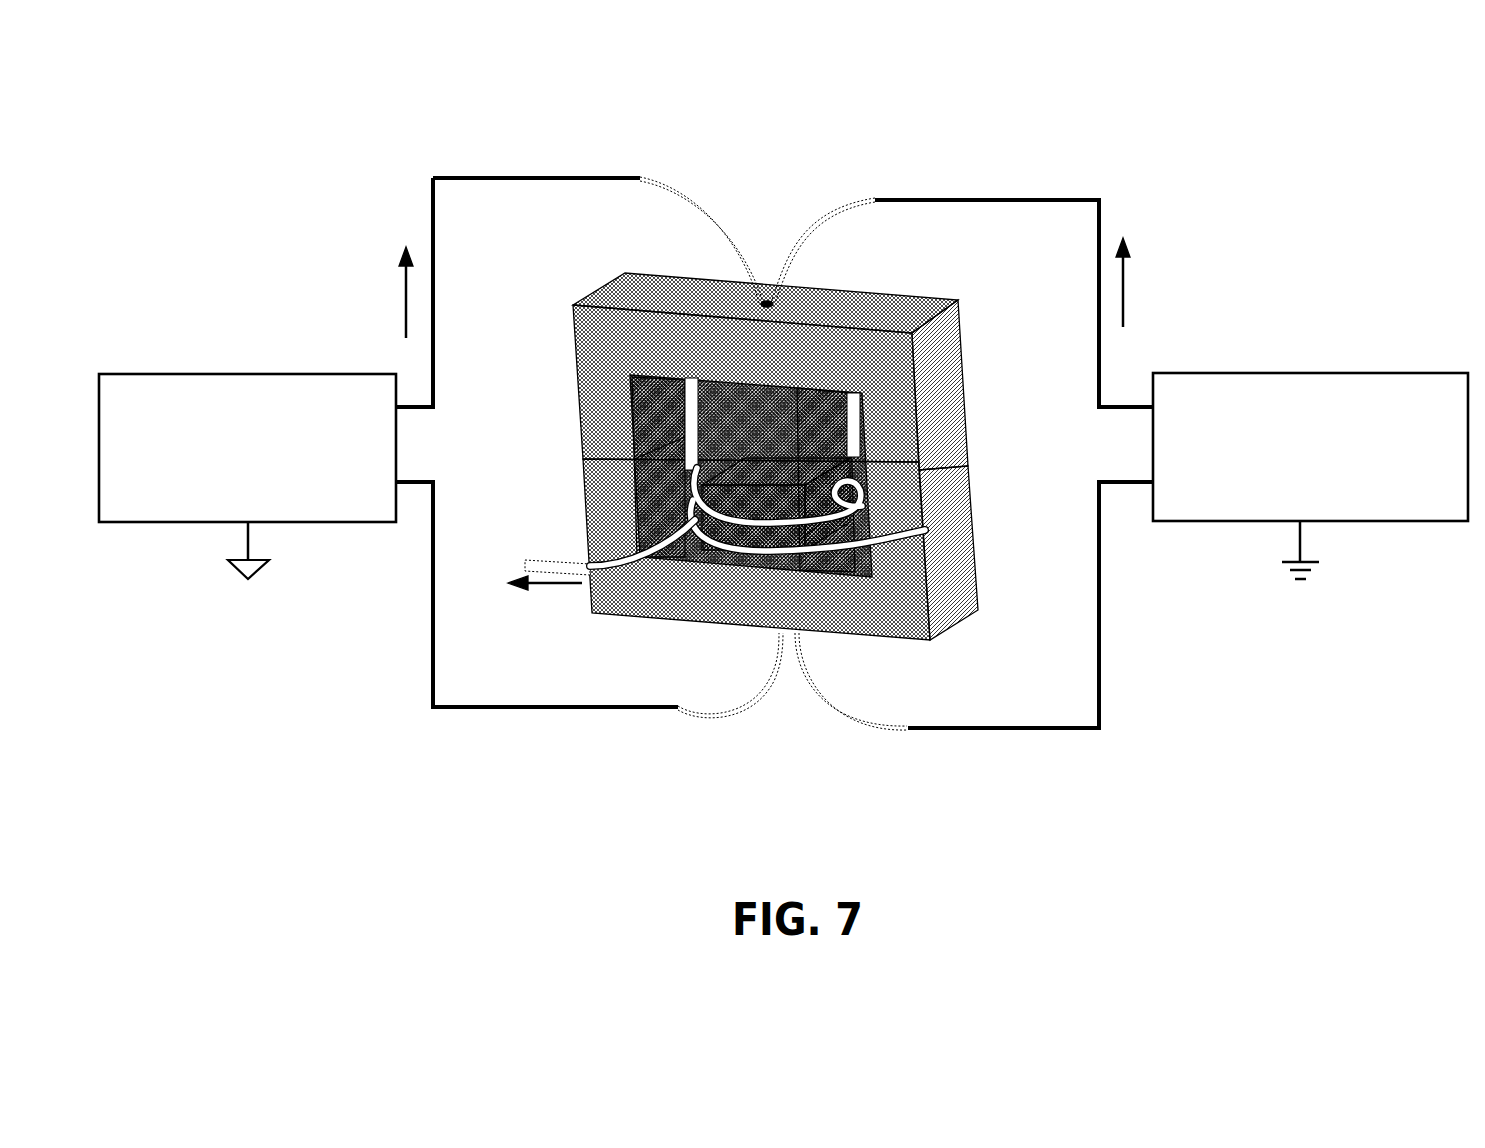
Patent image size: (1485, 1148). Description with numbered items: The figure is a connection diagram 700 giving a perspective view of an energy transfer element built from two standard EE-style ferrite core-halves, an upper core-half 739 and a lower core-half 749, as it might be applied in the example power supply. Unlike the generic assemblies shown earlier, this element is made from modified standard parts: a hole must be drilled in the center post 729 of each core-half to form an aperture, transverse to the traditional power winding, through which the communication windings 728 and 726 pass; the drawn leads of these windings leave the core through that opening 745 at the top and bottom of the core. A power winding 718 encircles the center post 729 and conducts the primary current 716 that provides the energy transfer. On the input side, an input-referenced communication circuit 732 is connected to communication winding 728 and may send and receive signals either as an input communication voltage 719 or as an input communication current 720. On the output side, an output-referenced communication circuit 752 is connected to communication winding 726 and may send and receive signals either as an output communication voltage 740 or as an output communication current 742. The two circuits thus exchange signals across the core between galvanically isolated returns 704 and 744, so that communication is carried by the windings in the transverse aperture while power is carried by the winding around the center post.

The connection diagram 700 is at (455, 88).
The input-referenced return 704 is at (235, 575).
The current IP1 716 is at (540, 595).
The power winding 718 is at (548, 558).
The input communication voltage Vc1 719 is at (450, 437).
The current IC1 720 is at (388, 271).
The communication winding 726 is at (830, 205).
The communication winding 728 is at (693, 215).
The center post 729 is at (777, 436).
The input-referenced communication circuit 732 is at (217, 366).
The upper core-half 739 is at (963, 426).
The voltage VC2 740 is at (1064, 424).
The current IC2 742 is at (1135, 256).
The output-referenced return 744 is at (1282, 571).
The core lead opening 745 is at (765, 303).
The lower core-half 749 is at (971, 581).
The output-referenced communication circuit 752 is at (1373, 366).